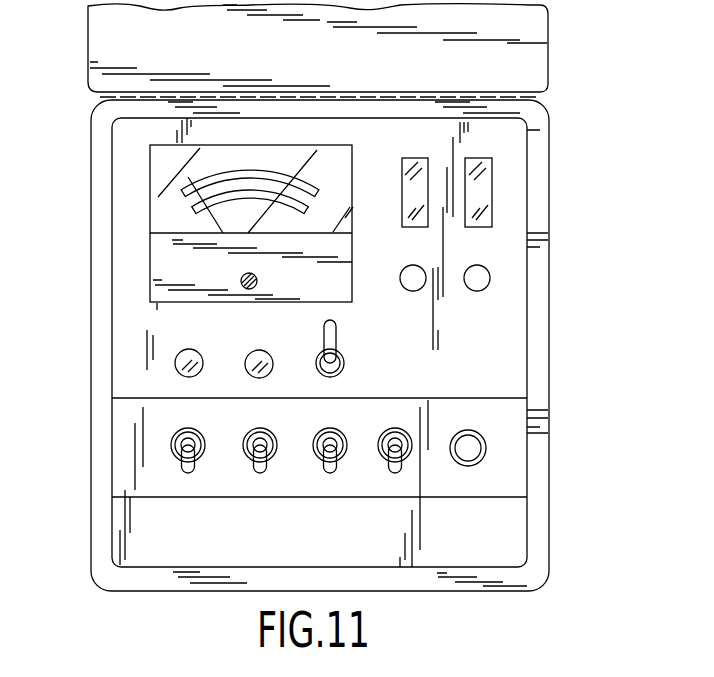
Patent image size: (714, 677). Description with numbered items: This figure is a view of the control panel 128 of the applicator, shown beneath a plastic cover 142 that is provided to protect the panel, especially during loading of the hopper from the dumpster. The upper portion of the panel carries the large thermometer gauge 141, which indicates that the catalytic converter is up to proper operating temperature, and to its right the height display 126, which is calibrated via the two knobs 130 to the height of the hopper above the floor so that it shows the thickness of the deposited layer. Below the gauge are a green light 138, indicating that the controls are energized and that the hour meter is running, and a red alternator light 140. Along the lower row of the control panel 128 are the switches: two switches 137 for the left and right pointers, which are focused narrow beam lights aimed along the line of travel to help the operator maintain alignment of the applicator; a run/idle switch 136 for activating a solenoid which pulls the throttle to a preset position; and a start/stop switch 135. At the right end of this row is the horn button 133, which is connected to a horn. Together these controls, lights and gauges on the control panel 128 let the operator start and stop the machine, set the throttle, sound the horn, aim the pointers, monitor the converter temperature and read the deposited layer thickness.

The plastic cover 142 is at (530, 70).
The control panel 128 is at (560, 308).
The thermometer gauge 141 is at (180, 160).
The height display 126 is at (422, 180).
The knobs 130 is at (478, 282).
The green light 138 is at (188, 351).
The red alternator light 140 is at (277, 340).
The switches for left and right pointers 137 is at (245, 458).
The run/idle switch 136 is at (337, 477).
The start/stop switch 135 is at (407, 462).
The horn button 133 is at (470, 452).